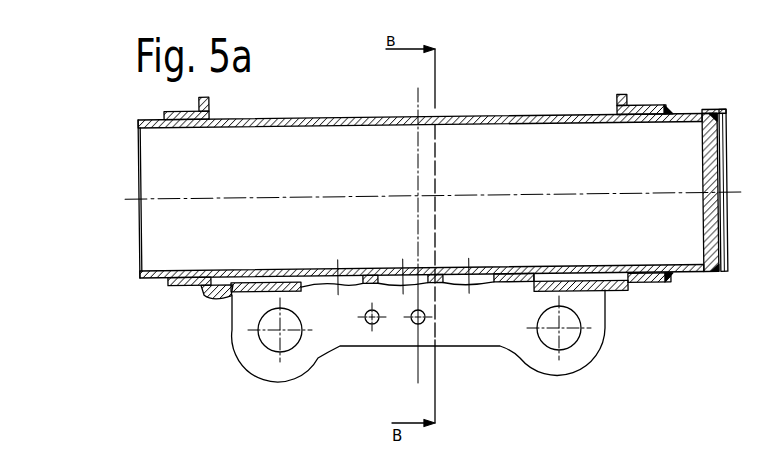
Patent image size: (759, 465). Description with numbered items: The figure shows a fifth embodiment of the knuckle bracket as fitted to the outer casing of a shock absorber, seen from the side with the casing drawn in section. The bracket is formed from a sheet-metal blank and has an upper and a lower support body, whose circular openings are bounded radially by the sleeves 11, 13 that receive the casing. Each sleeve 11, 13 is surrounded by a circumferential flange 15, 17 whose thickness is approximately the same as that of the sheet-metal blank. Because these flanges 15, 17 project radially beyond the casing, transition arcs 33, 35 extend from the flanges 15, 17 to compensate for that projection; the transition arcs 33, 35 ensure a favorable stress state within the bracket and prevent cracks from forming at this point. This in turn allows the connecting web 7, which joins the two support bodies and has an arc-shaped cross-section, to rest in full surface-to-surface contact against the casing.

The connecting web 7 is at (501, 290).
The sleeve 11 is at (668, 292).
The sleeve 13 is at (180, 287).
The circumferential flange 15 is at (623, 97).
The circumferential flange 17 is at (207, 102).
The transition arc 33 is at (620, 297).
The transition arc 35 is at (211, 298).